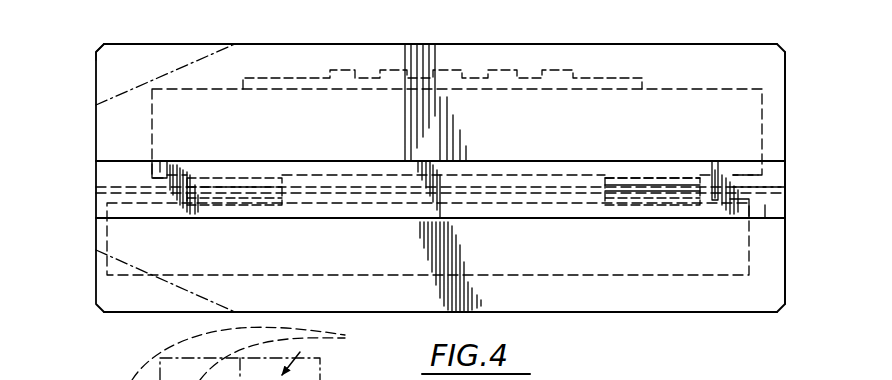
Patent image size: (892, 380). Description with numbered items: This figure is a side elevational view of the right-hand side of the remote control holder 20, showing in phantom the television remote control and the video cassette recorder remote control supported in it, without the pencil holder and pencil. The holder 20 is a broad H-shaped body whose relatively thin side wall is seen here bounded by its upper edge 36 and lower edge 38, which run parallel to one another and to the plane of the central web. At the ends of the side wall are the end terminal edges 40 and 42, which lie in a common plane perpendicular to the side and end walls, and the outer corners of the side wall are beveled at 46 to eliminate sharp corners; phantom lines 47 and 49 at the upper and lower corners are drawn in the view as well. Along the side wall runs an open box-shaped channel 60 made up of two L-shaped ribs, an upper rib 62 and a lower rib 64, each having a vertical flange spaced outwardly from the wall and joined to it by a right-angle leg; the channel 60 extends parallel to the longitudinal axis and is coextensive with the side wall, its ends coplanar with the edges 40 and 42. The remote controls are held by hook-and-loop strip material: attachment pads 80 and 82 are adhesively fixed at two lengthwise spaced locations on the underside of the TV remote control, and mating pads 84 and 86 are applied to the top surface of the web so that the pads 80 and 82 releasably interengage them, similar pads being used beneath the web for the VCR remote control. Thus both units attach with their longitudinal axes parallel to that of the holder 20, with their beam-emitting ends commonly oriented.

The remote control holder 20 is at (190, 36).
The upper edge 36 is at (290, 44).
The lower edge 38 is at (575, 312).
The end terminal edge 40 is at (96, 161).
The end terminal edge 42 is at (787, 136).
The beveled corner 46 is at (96, 48).
The phantom section line 47 is at (140, 82).
The phantom section line 49 is at (150, 275).
The open box-shape channel 60 is at (782, 176).
The upper rib 62 is at (724, 160).
The lower rib 64 is at (744, 212).
The attachment pad 80 is at (232, 182).
The attachment pad 82 is at (618, 184).
The mating pad 84 is at (255, 186).
The mating pad 86 is at (632, 184).